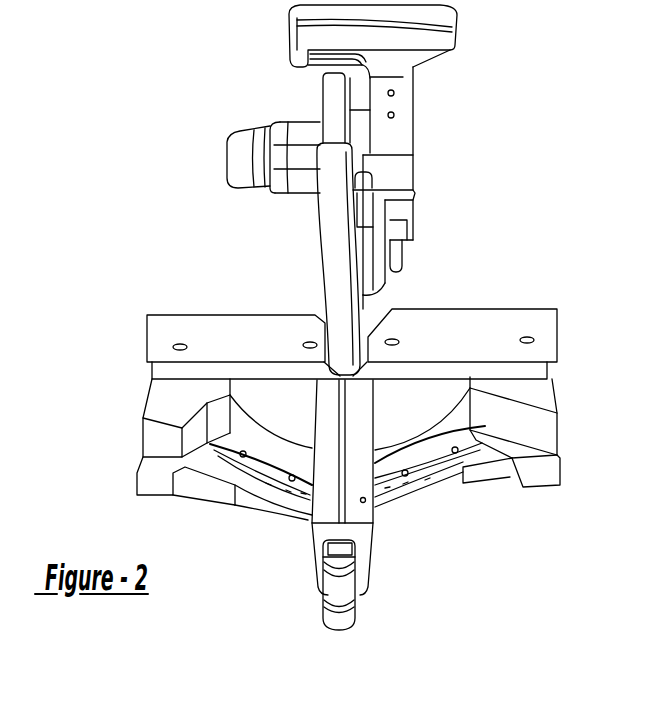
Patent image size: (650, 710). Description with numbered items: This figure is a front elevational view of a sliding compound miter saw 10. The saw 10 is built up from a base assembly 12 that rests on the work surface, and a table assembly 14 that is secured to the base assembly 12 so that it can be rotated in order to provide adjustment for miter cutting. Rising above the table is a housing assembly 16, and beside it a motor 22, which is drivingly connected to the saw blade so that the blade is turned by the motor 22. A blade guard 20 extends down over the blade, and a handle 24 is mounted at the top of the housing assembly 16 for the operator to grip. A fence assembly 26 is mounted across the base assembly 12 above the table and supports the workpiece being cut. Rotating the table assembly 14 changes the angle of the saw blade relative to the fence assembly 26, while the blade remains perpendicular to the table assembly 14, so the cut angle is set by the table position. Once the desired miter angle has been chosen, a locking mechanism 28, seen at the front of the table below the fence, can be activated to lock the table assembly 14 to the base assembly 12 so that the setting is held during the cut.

The sliding compound miter saw 10 is at (522, 200).
The base assembly 12 is at (143, 437).
The table assembly 14 is at (421, 447).
The housing assembly 16 is at (378, 305).
The blade guard 20 is at (330, 266).
The motor 22 is at (238, 142).
The handle 24 is at (445, 18).
The fence assembly 26 is at (529, 320).
The locking mechanism 28 is at (366, 606).